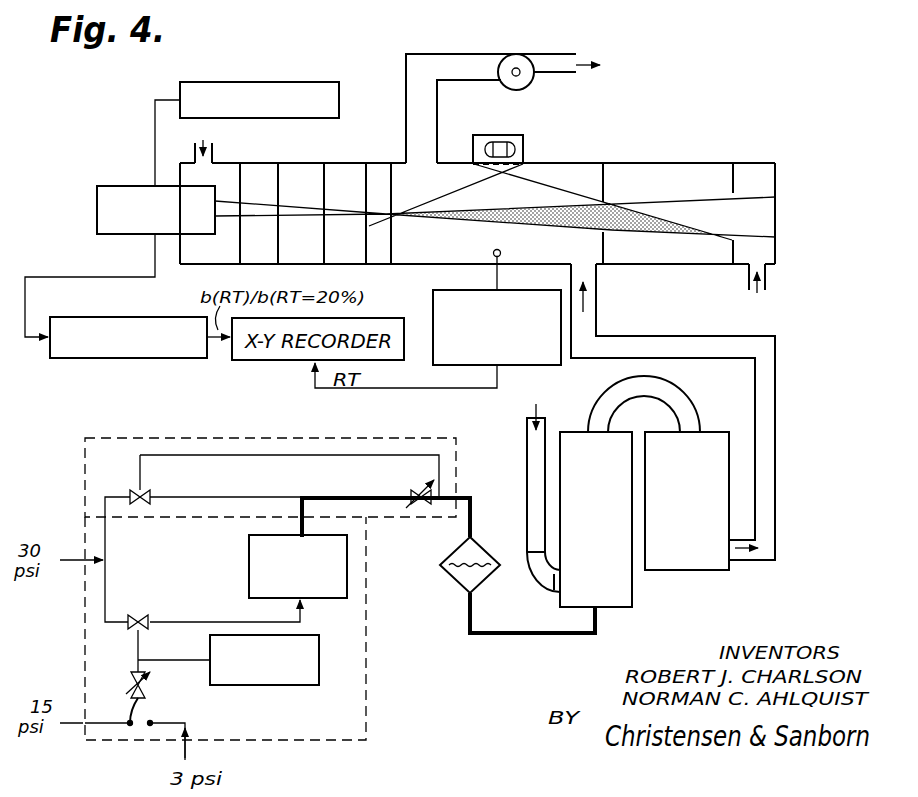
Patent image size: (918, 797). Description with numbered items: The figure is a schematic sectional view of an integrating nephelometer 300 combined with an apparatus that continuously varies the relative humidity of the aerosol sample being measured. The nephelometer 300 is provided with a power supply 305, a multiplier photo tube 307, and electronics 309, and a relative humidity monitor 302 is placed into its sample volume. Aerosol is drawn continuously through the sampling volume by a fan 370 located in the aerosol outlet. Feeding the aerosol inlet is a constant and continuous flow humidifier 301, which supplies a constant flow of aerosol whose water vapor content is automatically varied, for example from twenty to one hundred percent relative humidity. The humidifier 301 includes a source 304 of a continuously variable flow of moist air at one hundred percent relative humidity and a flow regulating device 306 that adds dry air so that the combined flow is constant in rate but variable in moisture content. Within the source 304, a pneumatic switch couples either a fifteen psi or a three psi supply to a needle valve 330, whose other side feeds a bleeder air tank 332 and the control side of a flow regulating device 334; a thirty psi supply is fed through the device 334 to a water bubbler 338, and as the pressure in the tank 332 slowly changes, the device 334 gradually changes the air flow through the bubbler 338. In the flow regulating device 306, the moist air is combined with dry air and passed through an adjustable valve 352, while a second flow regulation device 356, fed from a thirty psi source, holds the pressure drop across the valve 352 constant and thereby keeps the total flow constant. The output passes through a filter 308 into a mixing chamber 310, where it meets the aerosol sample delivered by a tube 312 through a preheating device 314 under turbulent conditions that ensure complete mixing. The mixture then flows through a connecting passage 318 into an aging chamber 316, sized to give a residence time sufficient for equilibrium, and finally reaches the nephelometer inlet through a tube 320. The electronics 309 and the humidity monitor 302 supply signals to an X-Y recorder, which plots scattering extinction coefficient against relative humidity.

The integrating nephelometer 300 is at (740, 156).
The constant and continuous flow humidifier 301 is at (548, 669).
The relative humidity monitor 302 is at (446, 291).
The source 304 is at (366, 648).
The power supply 305 is at (282, 82).
The flow regulating device 306 is at (460, 438).
The multiplier photo tube 307 is at (124, 186).
The filter 308 is at (487, 549).
The electronics 309 is at (140, 317).
The mixing chamber 310 is at (570, 434).
The tube 312 is at (527, 468).
The preheating device 314 is at (545, 580).
The aging chamber 316 is at (733, 436).
The connecting tube 318 is at (684, 390).
The tube 320 is at (716, 327).
The needle valve 330 is at (150, 695).
The bleeder air tank 332 is at (268, 688).
The flow regulating device 334 is at (142, 615).
The water bubbler 338 is at (249, 561).
The adjustable valve 352 is at (412, 494).
The second flow regulation device 356 is at (152, 487).
The fan 370 is at (560, 44).